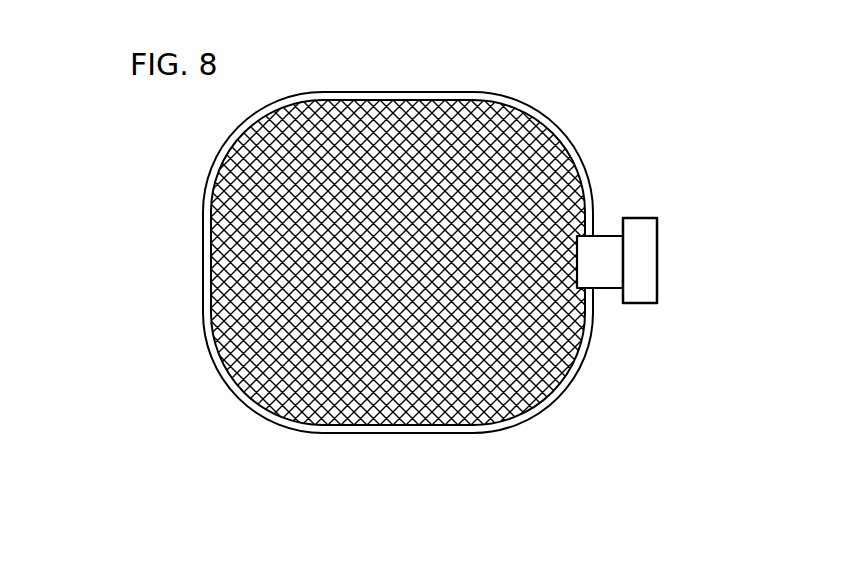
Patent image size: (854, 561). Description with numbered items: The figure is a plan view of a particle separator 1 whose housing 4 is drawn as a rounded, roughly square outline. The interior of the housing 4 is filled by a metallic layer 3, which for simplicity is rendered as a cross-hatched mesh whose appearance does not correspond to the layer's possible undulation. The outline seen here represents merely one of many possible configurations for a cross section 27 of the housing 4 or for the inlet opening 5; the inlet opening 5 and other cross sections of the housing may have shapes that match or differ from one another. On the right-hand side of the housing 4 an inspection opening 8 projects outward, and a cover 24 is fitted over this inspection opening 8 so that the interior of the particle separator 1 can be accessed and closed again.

The particle separator 1 is at (145, 177).
The metallic layer 3 is at (418, 377).
The housing 4 is at (453, 90).
The inlet opening 5 is at (240, 138).
The inspection opening 8 is at (607, 245).
The cover 24 is at (643, 287).
The cross section 27 is at (212, 245).